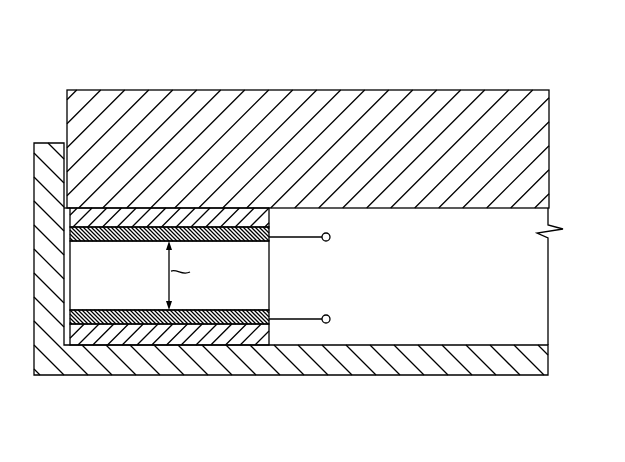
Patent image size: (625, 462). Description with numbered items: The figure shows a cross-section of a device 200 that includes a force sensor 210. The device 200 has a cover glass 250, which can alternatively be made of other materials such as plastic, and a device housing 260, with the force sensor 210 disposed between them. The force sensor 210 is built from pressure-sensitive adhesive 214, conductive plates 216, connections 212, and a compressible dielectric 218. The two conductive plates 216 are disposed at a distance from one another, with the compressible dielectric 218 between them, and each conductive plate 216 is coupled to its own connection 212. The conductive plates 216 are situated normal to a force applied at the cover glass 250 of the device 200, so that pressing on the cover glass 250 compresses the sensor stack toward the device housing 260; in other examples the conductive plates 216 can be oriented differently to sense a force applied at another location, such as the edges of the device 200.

The device 200 is at (55, 62).
The force sensor 210 is at (471, 208).
The connection 212 is at (331, 238).
The pressure-sensitive adhesive (PSA) 214 is at (270, 214).
The conductive plates 216 is at (270, 241).
The compressible dielectric 218 is at (270, 272).
The cover glass 250 is at (318, 160).
The device housing 260 is at (340, 370).